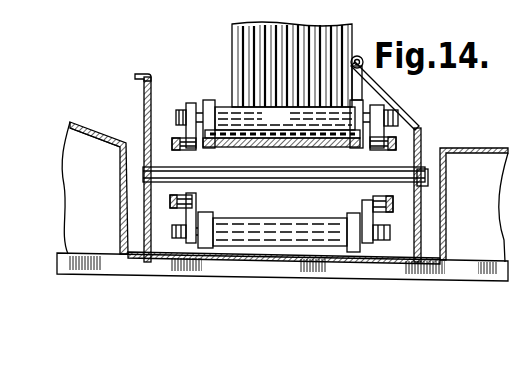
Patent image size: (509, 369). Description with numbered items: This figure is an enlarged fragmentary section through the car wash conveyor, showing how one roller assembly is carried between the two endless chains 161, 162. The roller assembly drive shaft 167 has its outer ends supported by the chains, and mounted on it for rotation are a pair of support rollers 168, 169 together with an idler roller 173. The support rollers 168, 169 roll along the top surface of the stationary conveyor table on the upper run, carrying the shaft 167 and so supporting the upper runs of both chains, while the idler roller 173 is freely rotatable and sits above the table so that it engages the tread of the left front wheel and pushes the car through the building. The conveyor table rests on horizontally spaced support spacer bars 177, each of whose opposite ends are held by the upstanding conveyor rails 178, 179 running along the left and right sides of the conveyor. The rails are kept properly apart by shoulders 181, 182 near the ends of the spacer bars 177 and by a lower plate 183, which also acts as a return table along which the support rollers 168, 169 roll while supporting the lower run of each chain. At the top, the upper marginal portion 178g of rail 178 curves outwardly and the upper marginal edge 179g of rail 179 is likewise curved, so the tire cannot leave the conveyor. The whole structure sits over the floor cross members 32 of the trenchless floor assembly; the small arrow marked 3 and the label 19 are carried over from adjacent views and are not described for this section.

The section indicator arrow 3 is at (88, 0).
The adjacent figure element 19 is at (168, 0).
The cross members 32 is at (282, 269).
The endless chain 161 is at (174, 144).
The endless chain 162 is at (418, 153).
The roller assembly drive shaft 167 is at (388, 120).
The support roller 168 is at (358, 100).
The support roller 169 is at (205, 100).
The idler roller 173 is at (288, 125).
The support spacer bar 177 is at (258, 182).
The conveyor rail 178 is at (141, 105).
The upper marginal portion 178g is at (146, 73).
The conveyor rail 179 is at (428, 127).
The upper marginal edge 179g is at (359, 56).
The shoulder 181 is at (136, 148).
The shoulder 182 is at (462, 150).
The lower plate 183 is at (162, 268).